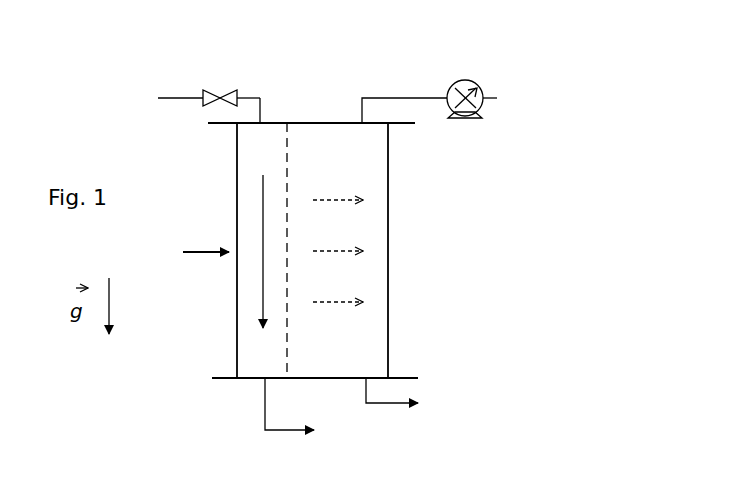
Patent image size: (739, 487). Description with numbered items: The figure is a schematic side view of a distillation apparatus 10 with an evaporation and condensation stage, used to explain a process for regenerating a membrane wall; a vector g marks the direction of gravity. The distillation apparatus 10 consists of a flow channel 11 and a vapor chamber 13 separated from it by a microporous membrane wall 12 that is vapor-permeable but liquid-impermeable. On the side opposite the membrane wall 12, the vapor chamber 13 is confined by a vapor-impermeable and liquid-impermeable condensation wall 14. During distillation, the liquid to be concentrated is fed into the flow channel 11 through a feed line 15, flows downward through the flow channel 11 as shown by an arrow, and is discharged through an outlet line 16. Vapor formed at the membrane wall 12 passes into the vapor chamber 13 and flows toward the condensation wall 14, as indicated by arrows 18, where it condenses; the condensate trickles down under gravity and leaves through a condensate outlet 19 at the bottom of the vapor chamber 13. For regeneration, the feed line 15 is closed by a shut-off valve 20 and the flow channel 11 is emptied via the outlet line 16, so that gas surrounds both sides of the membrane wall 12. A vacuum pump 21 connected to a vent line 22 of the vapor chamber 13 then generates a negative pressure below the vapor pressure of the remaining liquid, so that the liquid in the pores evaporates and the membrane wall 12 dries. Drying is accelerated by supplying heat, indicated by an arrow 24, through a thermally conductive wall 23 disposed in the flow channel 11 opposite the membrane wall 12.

The distillation apparatus 10 is at (273, 32).
The flow channel 11 is at (262, 250).
The membrane wall 12 is at (291, 208).
The vapor chamber 13 is at (363, 165).
The condensation wall 14 is at (388, 256).
The feed line 15 is at (178, 100).
The outlet line 16 is at (262, 410).
The arrows 18 is at (325, 306).
The condensate outlet 19 is at (380, 405).
The shut-off valve 20 is at (238, 95).
The vacuum pump 21 is at (200, 258).
The vent line 22 is at (390, 98).
The wall 23 is at (237, 305).
The arrow 24 is at (465, 119).